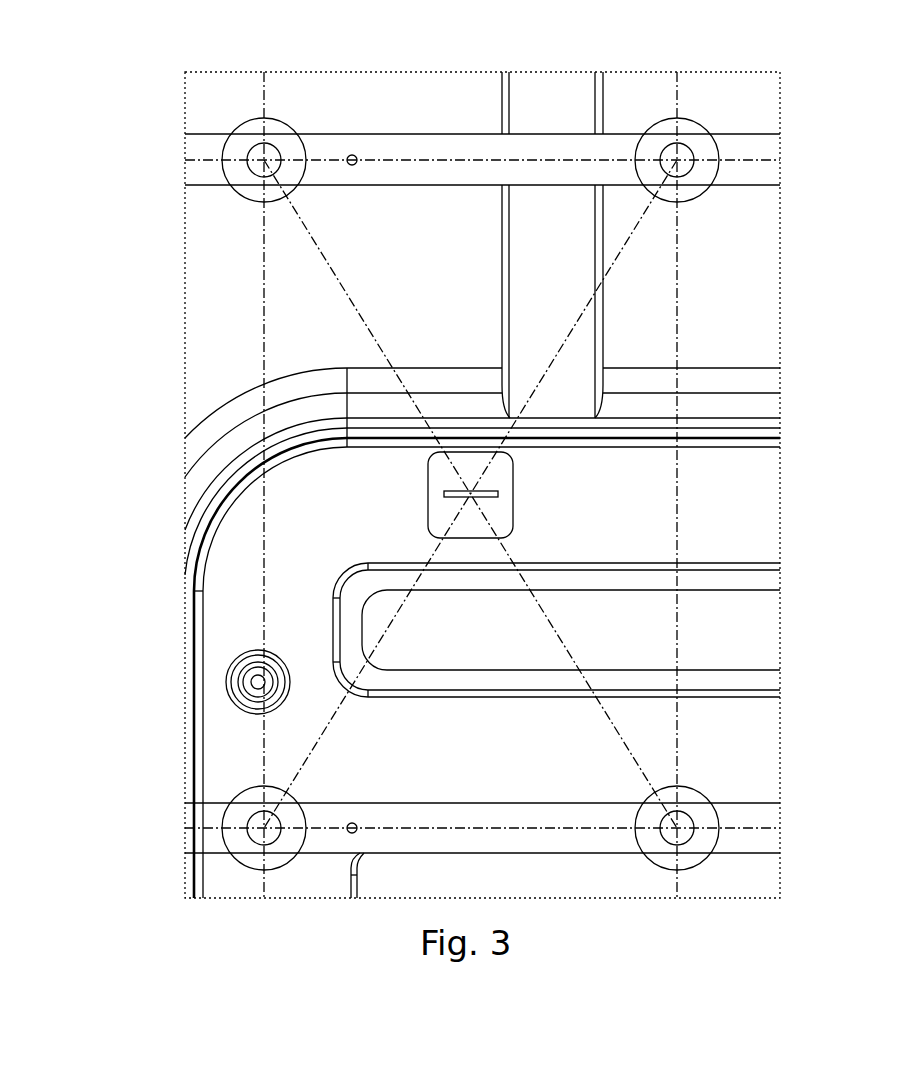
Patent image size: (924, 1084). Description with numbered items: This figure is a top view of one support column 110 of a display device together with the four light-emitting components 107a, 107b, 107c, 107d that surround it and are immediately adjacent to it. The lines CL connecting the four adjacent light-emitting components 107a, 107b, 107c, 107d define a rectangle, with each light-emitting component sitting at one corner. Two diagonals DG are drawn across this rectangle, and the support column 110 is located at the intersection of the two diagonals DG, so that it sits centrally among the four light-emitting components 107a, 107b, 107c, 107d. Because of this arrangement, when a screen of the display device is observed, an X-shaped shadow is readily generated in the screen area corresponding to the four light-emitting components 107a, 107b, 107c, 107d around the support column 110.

The light-emitting component 107a is at (225, 160).
The light-emitting component 107b is at (712, 162).
The light-emitting component 107c is at (225, 828).
The light-emitting component 107d is at (712, 830).
The support column 110 is at (545, 505).
The lines connecting four adjacent light-emitting components CL is at (437, 160).
The diagonals DG is at (305, 752).